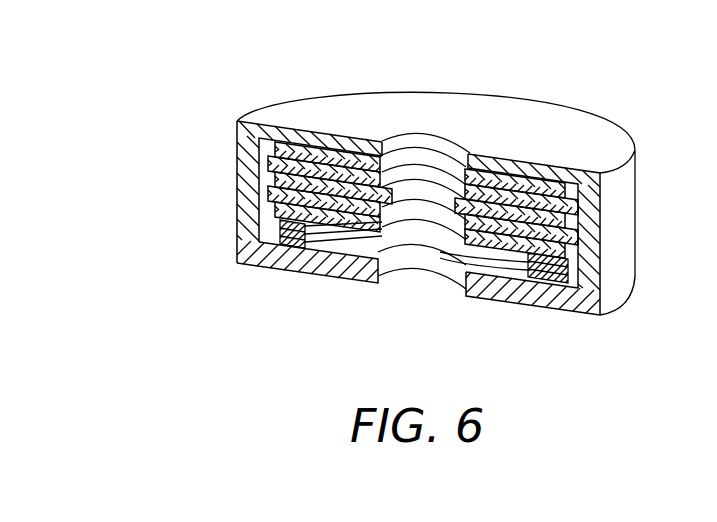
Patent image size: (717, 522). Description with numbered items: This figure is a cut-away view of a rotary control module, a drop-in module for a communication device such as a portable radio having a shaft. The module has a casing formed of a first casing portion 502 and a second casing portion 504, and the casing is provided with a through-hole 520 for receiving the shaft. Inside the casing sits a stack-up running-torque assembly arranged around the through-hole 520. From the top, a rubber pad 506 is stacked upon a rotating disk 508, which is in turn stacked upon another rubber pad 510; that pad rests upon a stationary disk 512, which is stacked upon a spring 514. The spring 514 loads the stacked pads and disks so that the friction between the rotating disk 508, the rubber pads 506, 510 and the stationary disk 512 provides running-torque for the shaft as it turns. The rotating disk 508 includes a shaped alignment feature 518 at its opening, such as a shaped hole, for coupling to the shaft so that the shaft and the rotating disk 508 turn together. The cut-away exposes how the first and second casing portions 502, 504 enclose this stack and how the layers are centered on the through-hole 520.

The first casing portion 502 is at (637, 220).
The second casing portion 504 is at (620, 308).
The rubber pad 506 is at (275, 150).
The rotating disk 508 is at (268, 165).
The rubber pad 510 is at (275, 181).
The stationary disk 512 is at (268, 195).
The spring 514 is at (276, 217).
The shaped alignment feature 518 is at (398, 173).
The through-hole 520 is at (445, 140).